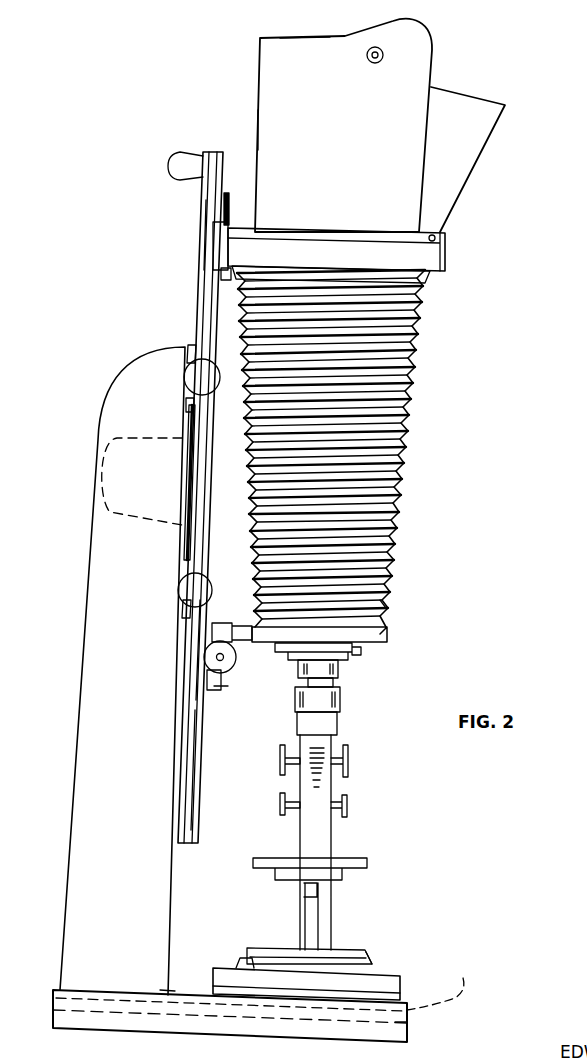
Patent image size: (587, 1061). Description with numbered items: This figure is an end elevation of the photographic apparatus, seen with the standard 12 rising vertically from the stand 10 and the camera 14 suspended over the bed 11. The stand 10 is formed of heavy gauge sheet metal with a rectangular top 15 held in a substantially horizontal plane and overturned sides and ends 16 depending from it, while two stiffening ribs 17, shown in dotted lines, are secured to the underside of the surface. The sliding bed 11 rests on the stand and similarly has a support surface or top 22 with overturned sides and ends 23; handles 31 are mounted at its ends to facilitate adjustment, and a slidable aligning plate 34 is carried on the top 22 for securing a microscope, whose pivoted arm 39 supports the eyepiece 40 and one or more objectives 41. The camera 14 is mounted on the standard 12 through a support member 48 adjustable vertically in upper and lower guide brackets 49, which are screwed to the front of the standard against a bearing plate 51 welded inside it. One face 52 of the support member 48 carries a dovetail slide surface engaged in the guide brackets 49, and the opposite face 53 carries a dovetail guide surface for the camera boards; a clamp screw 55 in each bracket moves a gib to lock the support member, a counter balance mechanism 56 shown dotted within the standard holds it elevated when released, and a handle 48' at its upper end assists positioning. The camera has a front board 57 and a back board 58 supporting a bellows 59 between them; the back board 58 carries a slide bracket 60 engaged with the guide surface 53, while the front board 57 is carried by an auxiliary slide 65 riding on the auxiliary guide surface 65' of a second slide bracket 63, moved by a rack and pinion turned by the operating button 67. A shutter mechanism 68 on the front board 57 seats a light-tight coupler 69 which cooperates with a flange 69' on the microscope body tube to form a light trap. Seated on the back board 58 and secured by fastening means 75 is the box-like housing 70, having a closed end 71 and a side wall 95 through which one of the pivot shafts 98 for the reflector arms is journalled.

The stand 10 is at (144, 1037).
The bed 11 is at (397, 973).
The standard 12 is at (76, 676).
The camera 14 is at (425, 383).
The top 15 is at (180, 1000).
The overturned sides and ends 16 is at (396, 1024).
The stiffening ribs 17 is at (435, 984).
The support surface 22 is at (222, 968).
The overturned sides and ends 23 is at (386, 990).
The handles 31 is at (363, 960).
The aligning plate 34 is at (239, 967).
The pivoted arm 39 is at (315, 830).
The eyepiece 40 is at (334, 683).
The objectives 41 is at (357, 866).
The support member 48 is at (211, 497).
The handle 48' is at (177, 152).
The guide brackets 49 is at (194, 350).
The bearing plate 51 is at (186, 553).
The face 52 is at (203, 272).
The face 53 is at (198, 731).
The clamp screw 55 is at (192, 382).
The counter balance mechanism 56 is at (113, 432).
The front board 57 is at (389, 637).
The back board 58 is at (422, 265).
The bellows 59 is at (394, 457).
The slide bracket 60 is at (218, 235).
The slide bracket 63 is at (206, 669).
The auxiliary slide 65 is at (232, 616).
The auxiliary guide surface 65' is at (240, 695).
The operating button 67 is at (214, 657).
The shutter mechanism 68 is at (362, 652).
The light-tight coupler 69 is at (296, 670).
The flange 69' is at (345, 703).
The housing 70 is at (255, 82).
The closed end 71 is at (299, 46).
The fastening means 75 is at (232, 194).
The side 95 is at (268, 132).
The pivot shaft 98 is at (369, 61).